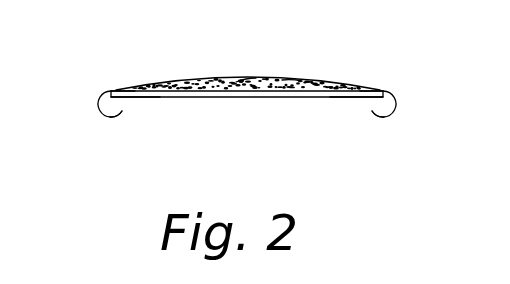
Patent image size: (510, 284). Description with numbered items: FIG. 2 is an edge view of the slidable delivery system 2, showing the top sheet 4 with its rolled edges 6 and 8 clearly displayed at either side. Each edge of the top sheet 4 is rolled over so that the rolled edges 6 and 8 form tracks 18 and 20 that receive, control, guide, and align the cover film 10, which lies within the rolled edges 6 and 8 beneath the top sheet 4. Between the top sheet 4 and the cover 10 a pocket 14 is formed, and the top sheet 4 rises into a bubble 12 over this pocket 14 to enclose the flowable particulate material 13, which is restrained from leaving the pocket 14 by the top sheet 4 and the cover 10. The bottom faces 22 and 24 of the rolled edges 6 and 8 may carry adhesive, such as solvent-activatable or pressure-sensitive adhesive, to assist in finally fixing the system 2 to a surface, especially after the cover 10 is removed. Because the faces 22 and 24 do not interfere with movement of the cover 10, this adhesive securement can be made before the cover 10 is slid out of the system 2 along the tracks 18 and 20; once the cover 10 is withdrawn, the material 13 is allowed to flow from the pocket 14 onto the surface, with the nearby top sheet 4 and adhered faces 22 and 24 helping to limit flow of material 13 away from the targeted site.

The slidable system device 2 is at (376, 89).
The top sheet 4 is at (121, 89).
The rolled edge 6 is at (398, 104).
The rolled edge 8 is at (95, 105).
The cover film 10 is at (250, 98).
The bubble 12 is at (175, 74).
The flowable particulate material 13 is at (241, 82).
The pocket 14 is at (289, 80).
The track 18 is at (126, 107).
The track 20 is at (372, 105).
The bottom face of rolled edge 22 is at (108, 125).
The bottom face of rolled edge 24 is at (393, 125).